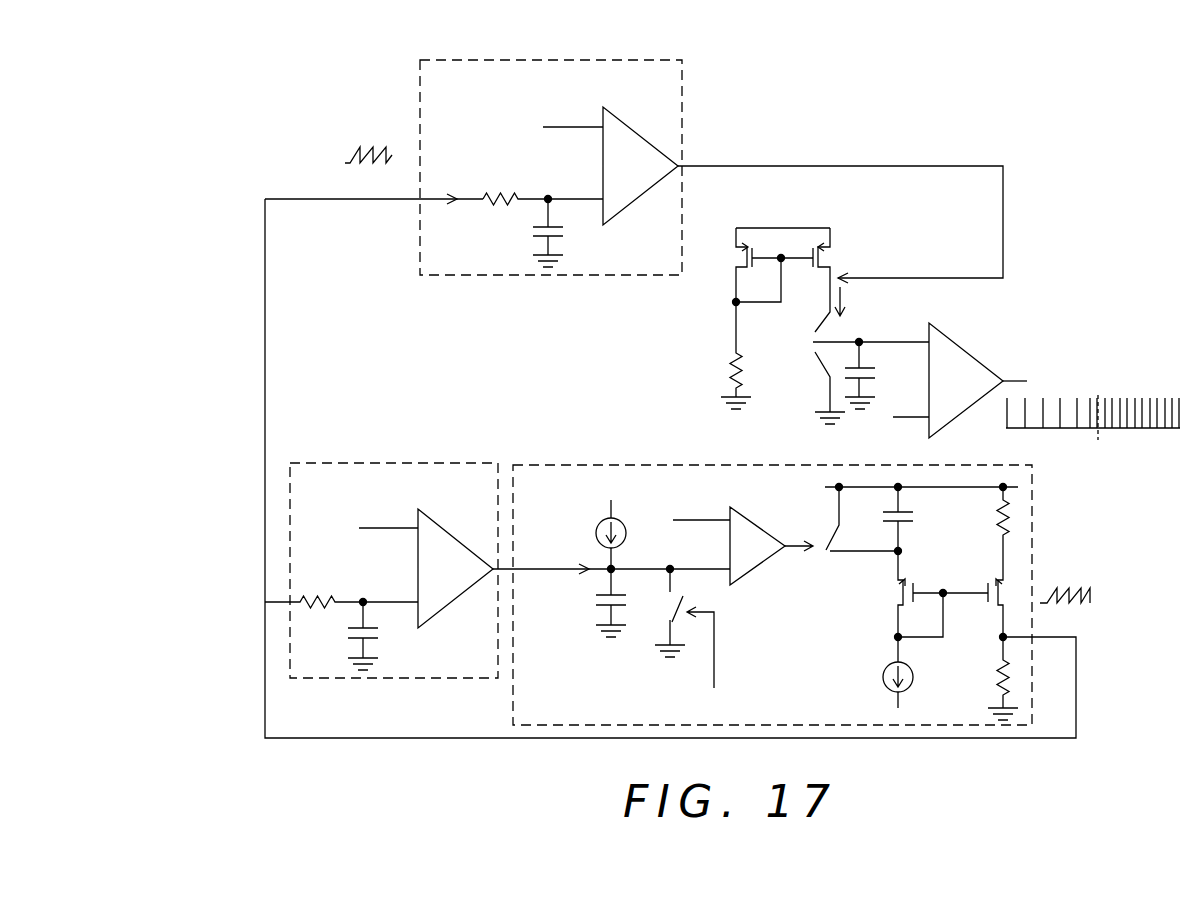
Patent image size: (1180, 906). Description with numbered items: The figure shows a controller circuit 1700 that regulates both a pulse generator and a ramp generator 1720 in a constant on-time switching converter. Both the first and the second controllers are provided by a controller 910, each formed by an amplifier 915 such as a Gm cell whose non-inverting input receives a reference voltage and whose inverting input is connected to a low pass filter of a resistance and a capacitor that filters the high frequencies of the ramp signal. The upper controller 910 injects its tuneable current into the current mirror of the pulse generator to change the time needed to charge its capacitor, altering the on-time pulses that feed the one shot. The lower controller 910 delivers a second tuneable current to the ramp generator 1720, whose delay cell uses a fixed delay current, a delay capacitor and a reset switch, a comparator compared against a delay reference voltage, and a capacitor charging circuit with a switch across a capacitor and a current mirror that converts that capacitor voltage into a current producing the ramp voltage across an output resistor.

The controller circuit 1700 is at (243, 668).
The controller 910 is at (594, 60).
The amplifier 915 is at (652, 140).
The ramp generator 1720 is at (1033, 511).